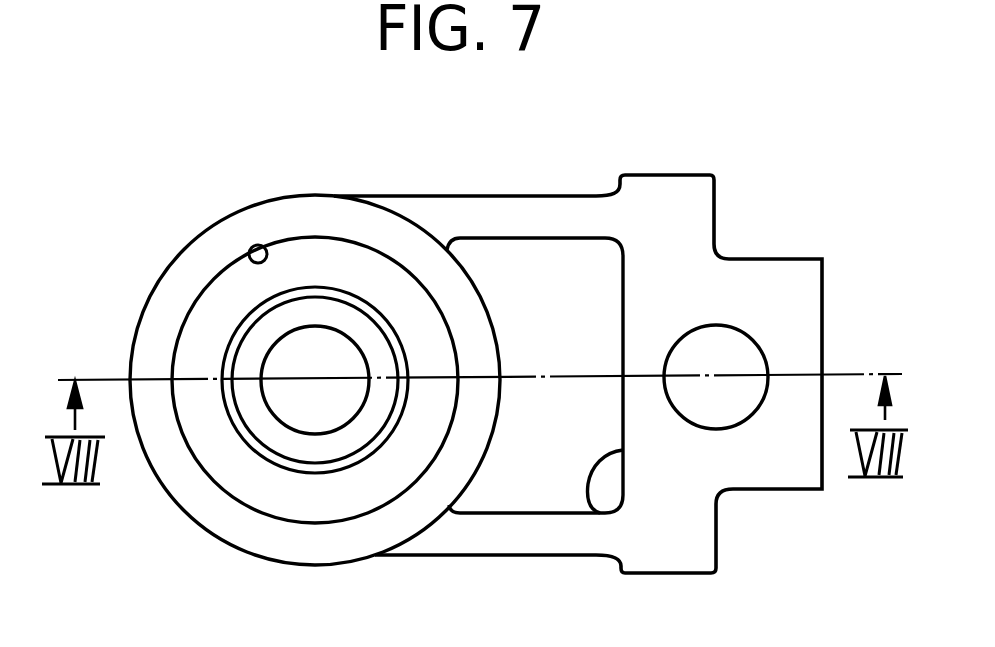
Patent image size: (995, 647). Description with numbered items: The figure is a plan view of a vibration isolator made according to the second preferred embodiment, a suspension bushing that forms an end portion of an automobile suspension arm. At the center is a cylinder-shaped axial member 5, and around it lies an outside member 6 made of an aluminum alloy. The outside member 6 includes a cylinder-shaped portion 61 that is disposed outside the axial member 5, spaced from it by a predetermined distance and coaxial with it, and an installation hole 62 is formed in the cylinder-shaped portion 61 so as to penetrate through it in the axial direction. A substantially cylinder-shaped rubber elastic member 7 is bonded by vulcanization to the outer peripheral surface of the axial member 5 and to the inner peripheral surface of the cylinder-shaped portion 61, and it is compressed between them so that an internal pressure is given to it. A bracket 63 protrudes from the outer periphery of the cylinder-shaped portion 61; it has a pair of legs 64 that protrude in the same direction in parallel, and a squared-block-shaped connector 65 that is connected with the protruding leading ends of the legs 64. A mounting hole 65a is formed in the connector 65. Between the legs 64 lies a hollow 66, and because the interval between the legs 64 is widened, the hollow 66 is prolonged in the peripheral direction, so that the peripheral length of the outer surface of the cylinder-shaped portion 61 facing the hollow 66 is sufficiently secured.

The axial member 5 is at (270, 433).
The outside member 6 is at (348, 176).
The rubber elastic member 7 is at (335, 487).
The cylinder-shaped portion 61 is at (185, 275).
The installation hole 62 is at (255, 252).
The bracket 63 is at (596, 183).
The legs 64 is at (485, 213).
The connector 65 is at (768, 280).
The mounting hole 65a is at (708, 418).
The hollow 66 is at (588, 500).